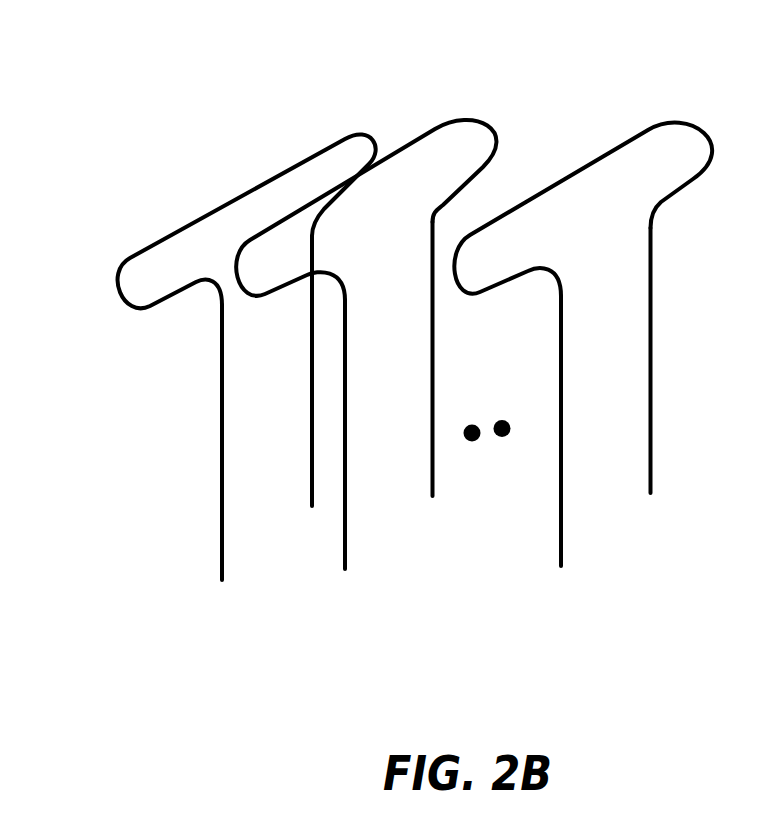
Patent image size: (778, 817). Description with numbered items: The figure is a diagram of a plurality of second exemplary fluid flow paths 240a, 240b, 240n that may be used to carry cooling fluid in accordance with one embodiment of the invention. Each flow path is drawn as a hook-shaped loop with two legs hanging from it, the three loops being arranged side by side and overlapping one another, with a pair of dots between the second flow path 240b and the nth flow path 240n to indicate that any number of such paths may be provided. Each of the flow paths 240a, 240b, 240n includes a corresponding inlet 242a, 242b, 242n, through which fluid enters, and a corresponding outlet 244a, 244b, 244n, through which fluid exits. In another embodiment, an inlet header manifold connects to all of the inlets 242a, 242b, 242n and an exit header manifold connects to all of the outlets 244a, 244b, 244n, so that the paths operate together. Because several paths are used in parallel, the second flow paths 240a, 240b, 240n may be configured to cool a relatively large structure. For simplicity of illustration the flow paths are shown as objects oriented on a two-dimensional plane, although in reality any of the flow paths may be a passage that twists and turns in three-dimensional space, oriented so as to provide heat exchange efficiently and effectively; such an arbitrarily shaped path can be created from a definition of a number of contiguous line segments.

The second exemplary flow path 240a is at (211, 407).
The second exemplary flow path 240b is at (357, 370).
The second exemplary flow path 240n is at (575, 362).
The inlet 242a is at (215, 585).
The inlet 242b is at (337, 582).
The inlet 242n is at (557, 573).
The outlet 244a is at (297, 488).
The outlet 244b is at (420, 480).
The outlet 244n is at (633, 476).